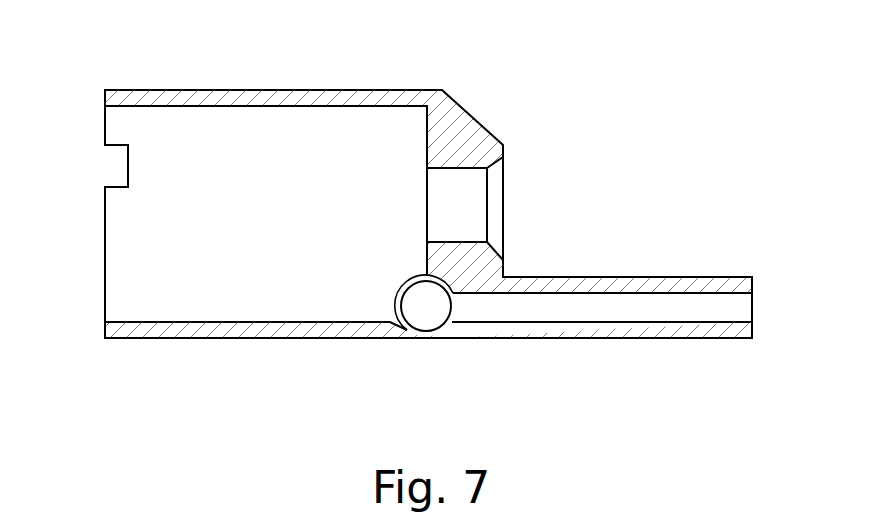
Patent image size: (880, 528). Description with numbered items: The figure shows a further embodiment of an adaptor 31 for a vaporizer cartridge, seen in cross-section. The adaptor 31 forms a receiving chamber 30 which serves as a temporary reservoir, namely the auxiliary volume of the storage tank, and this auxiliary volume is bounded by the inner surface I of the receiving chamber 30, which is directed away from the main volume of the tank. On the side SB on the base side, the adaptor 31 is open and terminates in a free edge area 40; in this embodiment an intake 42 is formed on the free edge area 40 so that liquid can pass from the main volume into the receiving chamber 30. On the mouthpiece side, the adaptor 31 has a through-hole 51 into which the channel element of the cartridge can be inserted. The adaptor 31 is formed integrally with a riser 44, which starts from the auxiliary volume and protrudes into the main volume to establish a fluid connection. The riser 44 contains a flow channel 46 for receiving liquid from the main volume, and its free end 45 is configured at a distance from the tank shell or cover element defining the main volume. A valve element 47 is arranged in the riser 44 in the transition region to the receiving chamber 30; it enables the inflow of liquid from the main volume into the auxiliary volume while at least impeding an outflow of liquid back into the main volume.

The adaptor 31 is at (418, 68).
The inner surface I is at (265, 114).
The side on the base side SB is at (85, 120).
The intake 42 is at (118, 163).
The free edge area 40 is at (98, 260).
The receiving chamber 30 is at (236, 290).
The through-hole 51 is at (473, 213).
The valve element 47 is at (432, 318).
The riser 44 is at (624, 354).
The free end 45 is at (745, 354).
The flow channel 46 is at (655, 308).